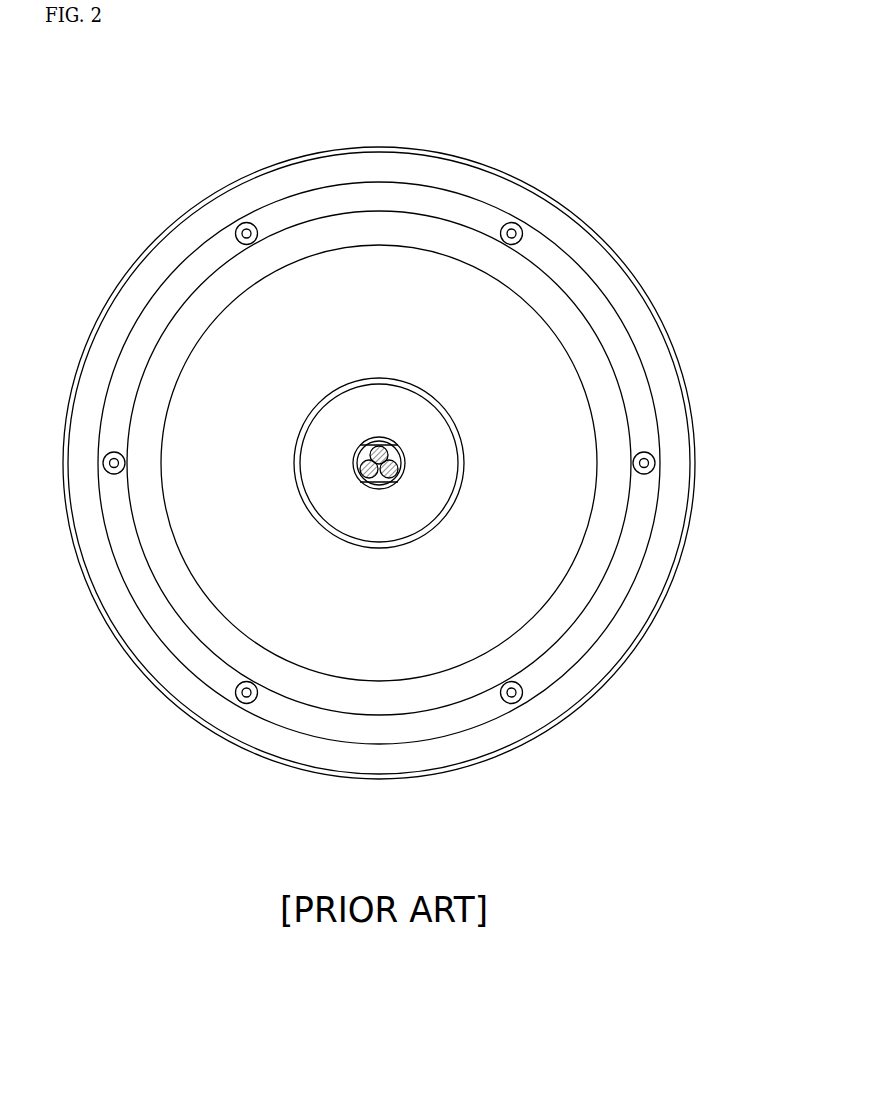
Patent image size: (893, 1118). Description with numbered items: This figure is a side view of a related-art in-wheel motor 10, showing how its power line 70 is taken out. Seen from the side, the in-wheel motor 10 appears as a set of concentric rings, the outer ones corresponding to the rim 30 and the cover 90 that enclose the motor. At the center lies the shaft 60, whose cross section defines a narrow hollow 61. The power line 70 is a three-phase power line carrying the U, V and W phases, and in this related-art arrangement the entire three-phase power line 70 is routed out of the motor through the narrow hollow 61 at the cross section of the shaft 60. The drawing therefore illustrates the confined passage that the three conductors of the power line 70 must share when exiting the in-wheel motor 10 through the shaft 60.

The in-wheel motor 10 is at (226, 128).
The rim 30 is at (548, 223).
The cover 90 is at (548, 223).
The shaft 60 is at (357, 475).
The hollow 61 is at (395, 450).
The power line 70 is at (395, 470).